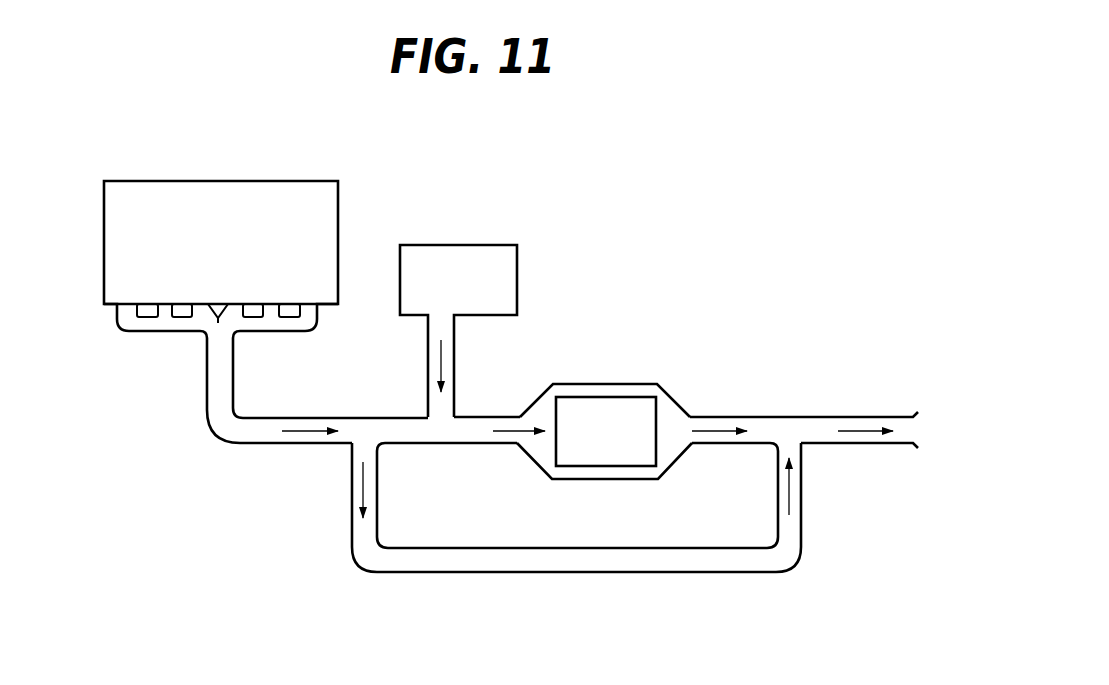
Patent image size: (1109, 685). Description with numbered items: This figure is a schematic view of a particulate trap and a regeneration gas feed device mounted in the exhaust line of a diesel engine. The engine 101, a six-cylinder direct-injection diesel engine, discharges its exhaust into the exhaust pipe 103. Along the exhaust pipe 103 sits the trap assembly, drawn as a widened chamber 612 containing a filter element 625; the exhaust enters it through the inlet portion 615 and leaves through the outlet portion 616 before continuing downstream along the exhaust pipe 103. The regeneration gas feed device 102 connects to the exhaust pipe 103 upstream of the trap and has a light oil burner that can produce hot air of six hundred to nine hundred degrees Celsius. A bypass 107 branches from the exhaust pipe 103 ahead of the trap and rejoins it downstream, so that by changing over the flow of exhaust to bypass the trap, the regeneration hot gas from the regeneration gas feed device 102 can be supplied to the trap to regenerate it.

The engine 101 is at (210, 195).
The regeneration gas feed device 102 is at (505, 268).
The exhaust pipe 103 is at (770, 425).
The bypass 107 is at (573, 562).
The expansion chamber 612 is at (587, 383).
The inlet pipe 615 is at (512, 437).
The outlet pipe section 616 is at (713, 433).
The filter element 625 is at (608, 467).